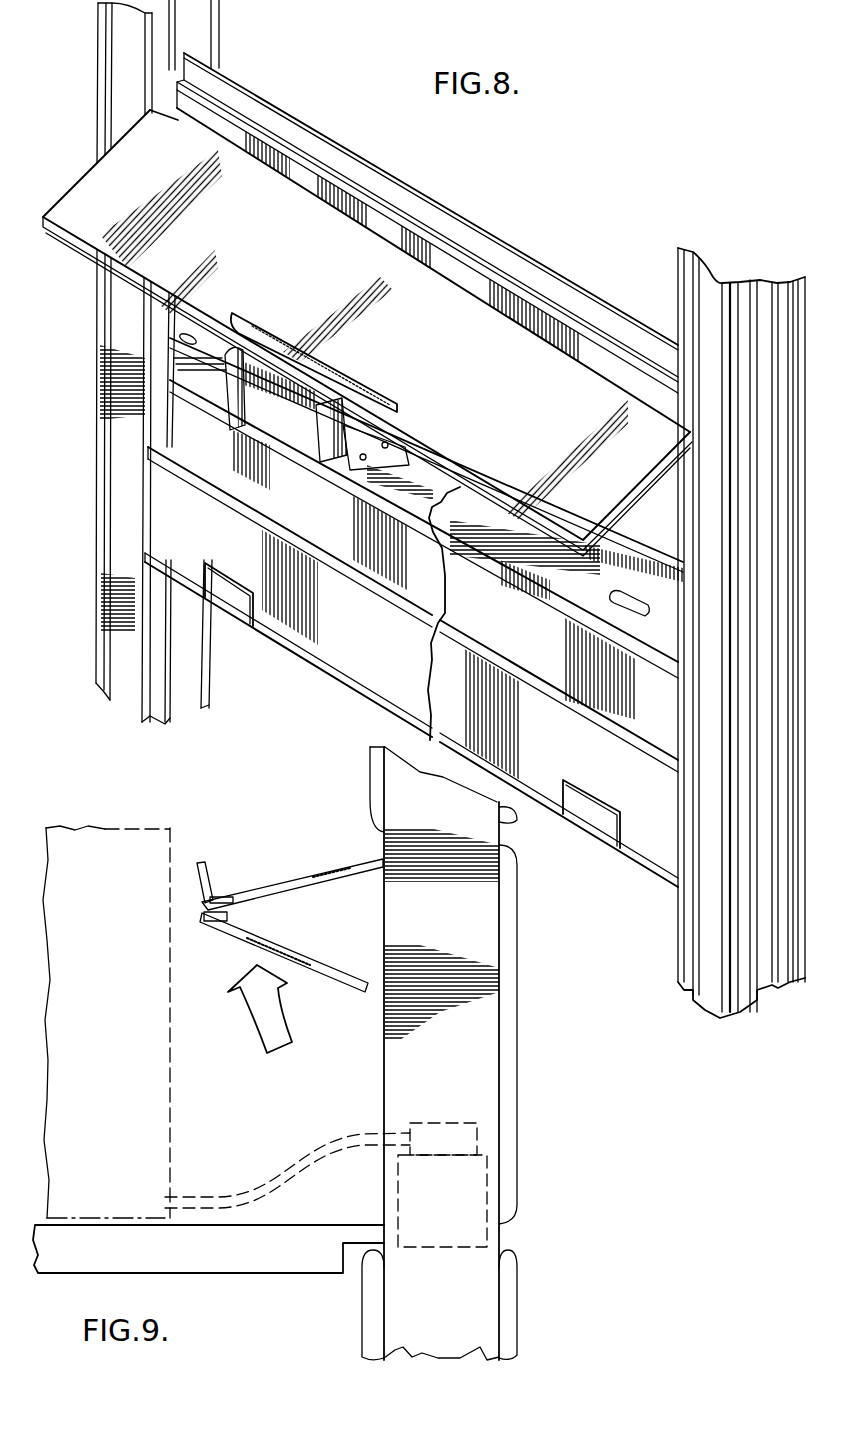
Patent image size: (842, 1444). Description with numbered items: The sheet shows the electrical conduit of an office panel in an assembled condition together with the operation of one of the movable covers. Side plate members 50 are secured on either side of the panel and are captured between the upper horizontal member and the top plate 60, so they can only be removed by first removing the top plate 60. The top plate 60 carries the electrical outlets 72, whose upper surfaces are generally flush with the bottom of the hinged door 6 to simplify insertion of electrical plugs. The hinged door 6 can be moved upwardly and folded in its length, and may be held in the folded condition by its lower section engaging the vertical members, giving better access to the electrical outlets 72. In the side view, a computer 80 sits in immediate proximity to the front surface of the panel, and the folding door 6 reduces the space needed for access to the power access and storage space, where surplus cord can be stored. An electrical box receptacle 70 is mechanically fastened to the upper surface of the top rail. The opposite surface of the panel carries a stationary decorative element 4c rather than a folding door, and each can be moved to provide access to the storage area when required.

In FIG. 8, the hinged door 6 is at (527, 434).
In FIG. 9, the hinged door 6 is at (297, 877).
In FIG. 8, the electrical outlets 72 is at (236, 414).
In FIG. 8, the side plate member 50 is at (336, 632).
In FIG. 8, the top plate 60 is at (660, 630).
In FIG. 9, the computer 80 is at (97, 848).
In FIG. 9, the stationary decorative element 4c is at (513, 1063).
In FIG. 9, the electrical box receptacle 70 is at (463, 1140).